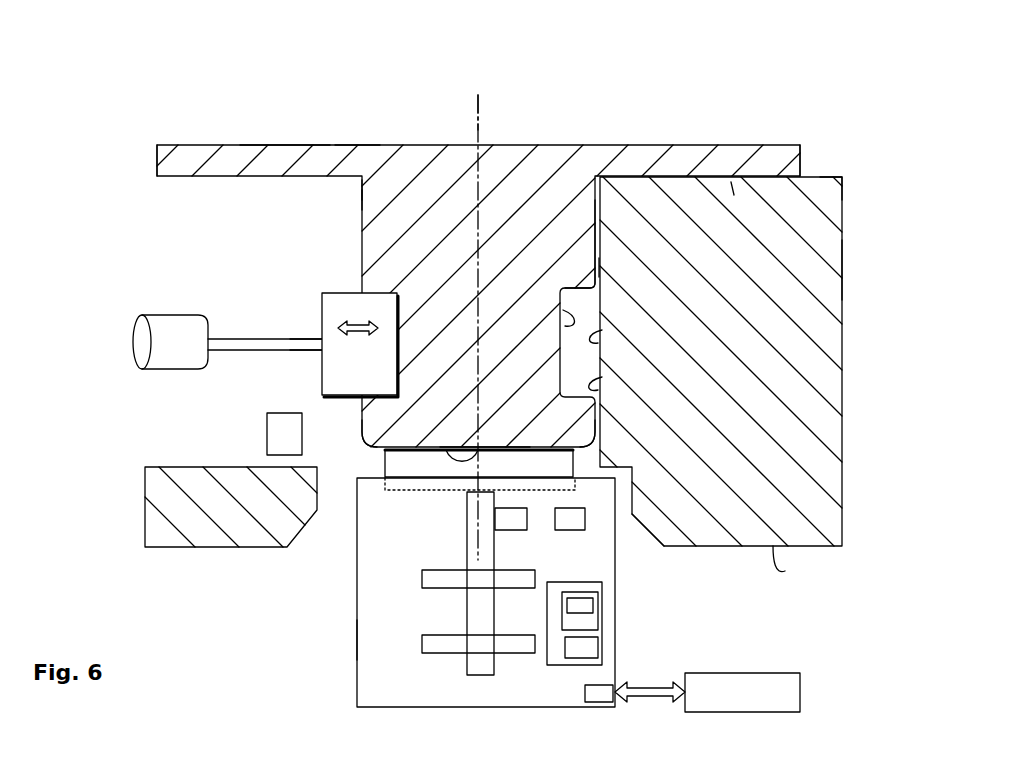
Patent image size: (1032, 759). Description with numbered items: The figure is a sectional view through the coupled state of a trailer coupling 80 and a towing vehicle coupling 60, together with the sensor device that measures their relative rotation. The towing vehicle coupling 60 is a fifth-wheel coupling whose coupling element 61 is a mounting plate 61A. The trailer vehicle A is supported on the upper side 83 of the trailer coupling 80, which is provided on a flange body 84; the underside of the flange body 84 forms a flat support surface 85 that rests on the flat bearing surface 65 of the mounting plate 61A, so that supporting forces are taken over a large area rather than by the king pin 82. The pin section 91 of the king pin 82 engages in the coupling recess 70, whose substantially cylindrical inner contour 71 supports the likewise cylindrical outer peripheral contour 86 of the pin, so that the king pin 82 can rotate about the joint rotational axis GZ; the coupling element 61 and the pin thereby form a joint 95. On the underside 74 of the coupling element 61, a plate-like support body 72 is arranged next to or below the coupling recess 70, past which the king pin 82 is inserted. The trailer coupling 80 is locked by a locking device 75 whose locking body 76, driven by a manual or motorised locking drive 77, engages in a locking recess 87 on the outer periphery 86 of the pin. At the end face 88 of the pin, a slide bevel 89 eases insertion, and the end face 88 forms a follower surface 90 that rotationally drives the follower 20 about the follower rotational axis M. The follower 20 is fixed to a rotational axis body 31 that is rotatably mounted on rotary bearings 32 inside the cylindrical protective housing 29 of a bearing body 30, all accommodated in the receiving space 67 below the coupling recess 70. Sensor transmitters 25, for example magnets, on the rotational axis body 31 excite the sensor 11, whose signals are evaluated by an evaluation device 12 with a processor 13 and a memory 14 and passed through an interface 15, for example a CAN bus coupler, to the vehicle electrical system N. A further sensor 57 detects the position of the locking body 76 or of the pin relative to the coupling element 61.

The sensor 11 is at (567, 522).
The evaluation device 12 is at (610, 604).
The processor 13 is at (578, 650).
The memory 14 is at (588, 622).
The interface 15 is at (603, 695).
The follower 20 is at (397, 473).
The sensor transmitter 25 is at (507, 528).
The protective housing 29 is at (357, 637).
The bearing body 30 is at (357, 590).
The rotational axis body 31 is at (475, 663).
The rotary bearing 32 is at (427, 640).
The sensor 57 is at (275, 437).
The towing vehicle coupling 60 is at (828, 160).
The coupling element 61 is at (840, 203).
The mounting plate 61A is at (843, 267).
The bearing surface 65 is at (807, 173).
The receiving space 67 is at (620, 498).
The coupling recess 70 is at (583, 290).
The inner contour 71 is at (602, 330).
The support body 72 is at (197, 487).
The underside 74 is at (785, 571).
The locking device 75 is at (298, 354).
The locking body 76 is at (324, 316).
The locking drive 77 is at (142, 330).
The trailer coupling 80 is at (670, 140).
The king pin 82 is at (382, 227).
The upper side 83 is at (357, 143).
The flange body 84 is at (187, 157).
The support surface 85 is at (734, 195).
The outer peripheral contour 86 is at (360, 195).
The locking recess 87 is at (360, 290).
The end face 88 is at (622, 449).
The slide bevel 89 is at (372, 437).
The follower surface 90 is at (487, 447).
The pin section 91 is at (360, 188).
The joint 95 is at (599, 258).
The vehicle electrical system N is at (753, 678).
The trailer vehicle A is at (284, 138).
The follower rotational axis M is at (475, 123).
The joint rotational axis GZ is at (480, 104).